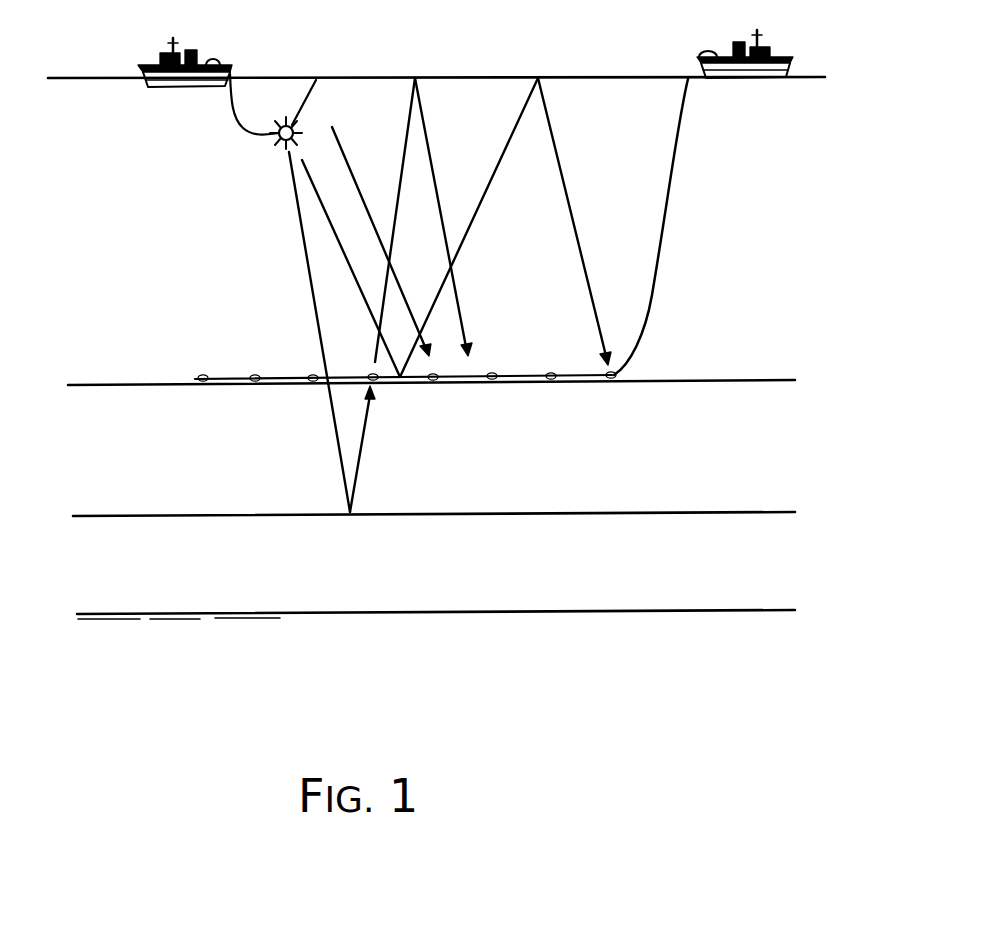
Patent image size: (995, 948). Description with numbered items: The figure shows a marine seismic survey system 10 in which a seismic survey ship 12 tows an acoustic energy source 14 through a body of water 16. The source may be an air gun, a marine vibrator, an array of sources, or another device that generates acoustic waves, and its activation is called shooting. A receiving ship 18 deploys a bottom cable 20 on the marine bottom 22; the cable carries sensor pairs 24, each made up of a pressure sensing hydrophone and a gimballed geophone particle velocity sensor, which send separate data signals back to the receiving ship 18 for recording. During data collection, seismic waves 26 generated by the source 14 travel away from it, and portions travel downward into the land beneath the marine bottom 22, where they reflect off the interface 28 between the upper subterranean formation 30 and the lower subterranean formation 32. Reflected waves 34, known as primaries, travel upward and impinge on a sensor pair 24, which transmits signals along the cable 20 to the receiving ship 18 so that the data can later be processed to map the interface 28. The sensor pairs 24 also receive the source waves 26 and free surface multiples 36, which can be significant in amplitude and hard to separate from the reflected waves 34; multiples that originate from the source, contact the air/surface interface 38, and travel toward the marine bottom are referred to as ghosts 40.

The marine seismic survey system 10 is at (806, 245).
The seismic survey ship 12 is at (233, 72).
The acoustic energy source 14 is at (303, 112).
The body of water 16 is at (369, 110).
The receiving ship 18 is at (735, 55).
The bottom cable 20 is at (650, 303).
The marine bottom 22 is at (710, 382).
The sensor pair 24 is at (202, 376).
The seismic waves 26 is at (320, 209).
The interface 28 is at (112, 515).
The subterranean formation 30 is at (150, 453).
The subterranean formation 32 is at (436, 588).
The reflected waves 34 is at (362, 450).
The free surface multiples 36 is at (348, 162).
The air/surface interface 38 is at (488, 77).
The ghosts 40 is at (374, 222).